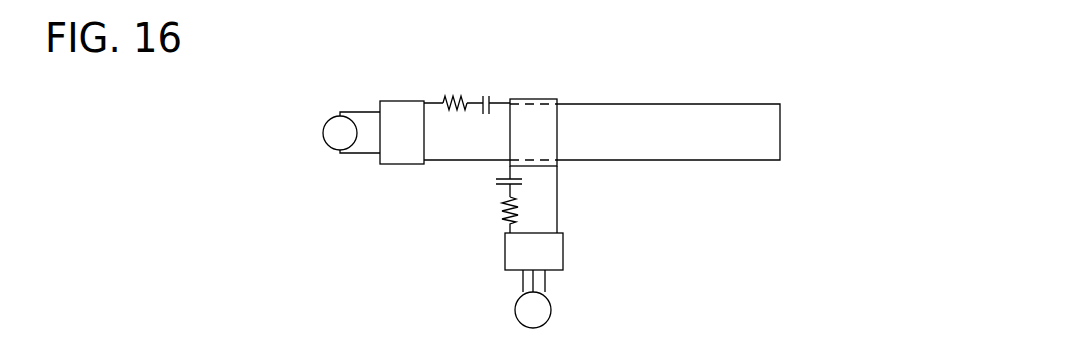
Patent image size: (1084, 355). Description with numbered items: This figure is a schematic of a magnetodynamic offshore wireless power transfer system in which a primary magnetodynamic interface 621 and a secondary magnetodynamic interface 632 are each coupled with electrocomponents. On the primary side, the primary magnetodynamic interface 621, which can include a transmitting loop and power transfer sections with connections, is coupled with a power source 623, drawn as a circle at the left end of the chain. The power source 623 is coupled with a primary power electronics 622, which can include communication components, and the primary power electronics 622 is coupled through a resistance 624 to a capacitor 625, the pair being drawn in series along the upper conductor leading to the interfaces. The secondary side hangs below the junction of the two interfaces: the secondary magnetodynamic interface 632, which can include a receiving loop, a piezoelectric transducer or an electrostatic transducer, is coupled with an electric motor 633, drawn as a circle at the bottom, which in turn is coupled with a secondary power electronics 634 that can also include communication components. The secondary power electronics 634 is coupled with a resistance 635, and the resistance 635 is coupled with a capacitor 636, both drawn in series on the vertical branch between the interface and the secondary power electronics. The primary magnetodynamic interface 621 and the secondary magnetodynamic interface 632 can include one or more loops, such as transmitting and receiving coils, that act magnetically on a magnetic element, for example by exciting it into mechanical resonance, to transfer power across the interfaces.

The primary magnetodynamic interface 621 is at (698, 101).
The primary power electronics 622 is at (402, 101).
The power source 623 is at (332, 116).
The resistance 624 is at (446, 97).
The capacitor 625 is at (489, 96).
The secondary magnetodynamic interface 632 is at (561, 97).
The electric motor 633 is at (551, 310).
The secondary power electronics 634 is at (563, 252).
The resistance 635 is at (498, 211).
The capacitor 636 is at (494, 181).